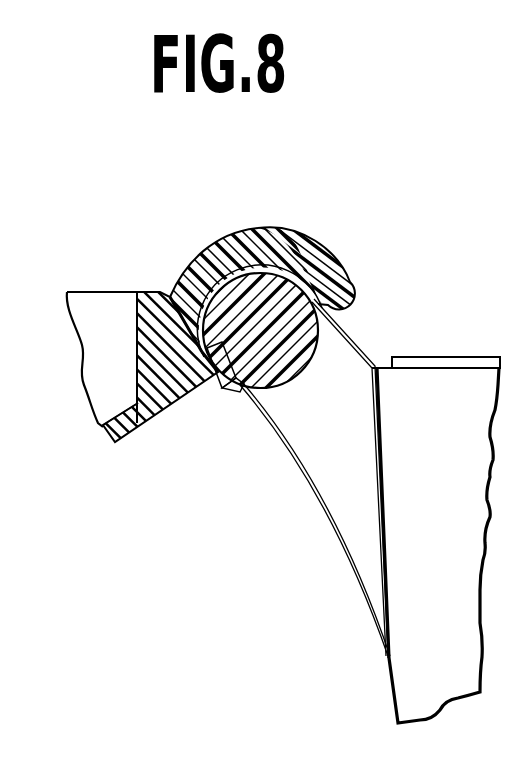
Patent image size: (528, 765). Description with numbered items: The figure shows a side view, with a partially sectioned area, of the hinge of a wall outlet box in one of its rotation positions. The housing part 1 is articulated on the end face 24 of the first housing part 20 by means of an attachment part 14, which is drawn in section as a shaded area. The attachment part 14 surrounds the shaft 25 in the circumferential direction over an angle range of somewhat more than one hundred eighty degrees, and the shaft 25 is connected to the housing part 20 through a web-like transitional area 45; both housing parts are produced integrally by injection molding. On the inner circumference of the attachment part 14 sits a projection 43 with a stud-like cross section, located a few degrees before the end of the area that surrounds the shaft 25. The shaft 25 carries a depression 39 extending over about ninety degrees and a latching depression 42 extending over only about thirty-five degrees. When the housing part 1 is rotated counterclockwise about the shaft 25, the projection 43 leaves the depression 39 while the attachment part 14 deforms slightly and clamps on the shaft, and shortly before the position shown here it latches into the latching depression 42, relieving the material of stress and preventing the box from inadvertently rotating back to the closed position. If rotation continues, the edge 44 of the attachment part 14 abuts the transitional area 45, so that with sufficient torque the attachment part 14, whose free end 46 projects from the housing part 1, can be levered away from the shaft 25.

The housing part 1 is at (103, 306).
The attachment part 14 is at (325, 252).
The first housing part 20 is at (421, 388).
The end face 24 is at (360, 654).
The shaft 25 is at (300, 326).
The depression 39 is at (262, 270).
The latching depression 42 is at (243, 394).
The projection 43 is at (193, 392).
The edge 44 is at (212, 388).
The transitional area 45 is at (298, 461).
The free end 46 is at (357, 464).